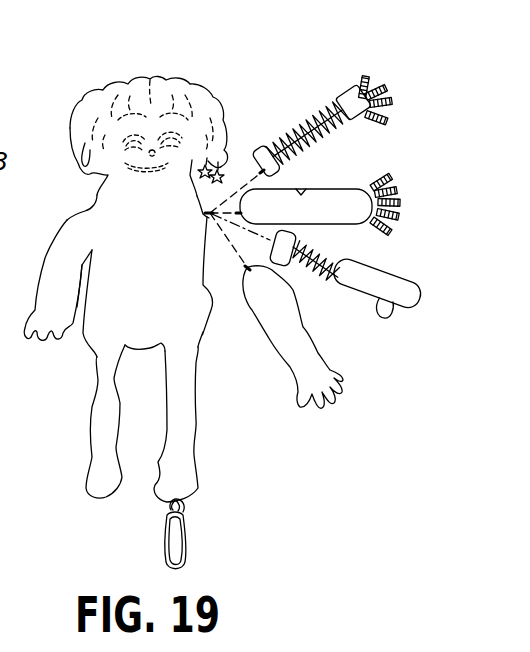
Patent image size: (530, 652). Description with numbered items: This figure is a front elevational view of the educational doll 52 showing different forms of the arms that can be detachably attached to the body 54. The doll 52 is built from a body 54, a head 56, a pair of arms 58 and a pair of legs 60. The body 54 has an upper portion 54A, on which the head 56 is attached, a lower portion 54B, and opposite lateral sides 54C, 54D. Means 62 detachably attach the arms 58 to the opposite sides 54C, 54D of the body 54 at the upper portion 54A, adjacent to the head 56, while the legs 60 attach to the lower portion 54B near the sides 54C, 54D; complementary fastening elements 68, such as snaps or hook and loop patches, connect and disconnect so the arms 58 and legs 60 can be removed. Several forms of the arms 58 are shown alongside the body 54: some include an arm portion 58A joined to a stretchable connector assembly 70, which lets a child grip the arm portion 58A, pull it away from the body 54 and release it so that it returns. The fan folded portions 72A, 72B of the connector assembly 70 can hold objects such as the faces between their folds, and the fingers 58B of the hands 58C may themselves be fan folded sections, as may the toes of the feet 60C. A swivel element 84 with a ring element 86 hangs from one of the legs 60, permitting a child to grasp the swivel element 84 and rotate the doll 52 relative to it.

The educational doll 52 is at (0, 30).
The body 54 is at (128, 285).
The upper portion of the body 54A is at (148, 245).
The lower portion of the body 54B is at (153, 327).
The lateral side of the body 54C is at (205, 288).
The lateral side of the body 54D is at (85, 292).
The head 56 is at (160, 76).
The arm 58 is at (64, 216).
The arm portion 58A is at (348, 100).
The fingers 58B is at (363, 93).
The hand 58C is at (400, 77).
The leg 60 is at (88, 426).
The foot 60C is at (196, 483).
The means for detachably attaching the arms 62 is at (238, 157).
The fastening element 68 is at (287, 182).
The stretchable connector assembly 70 is at (329, 252).
The tubular arm core 72A is at (300, 258).
The core socket 72B is at (313, 140).
The swivel element 84 is at (171, 503).
The ring element 86 is at (184, 513).